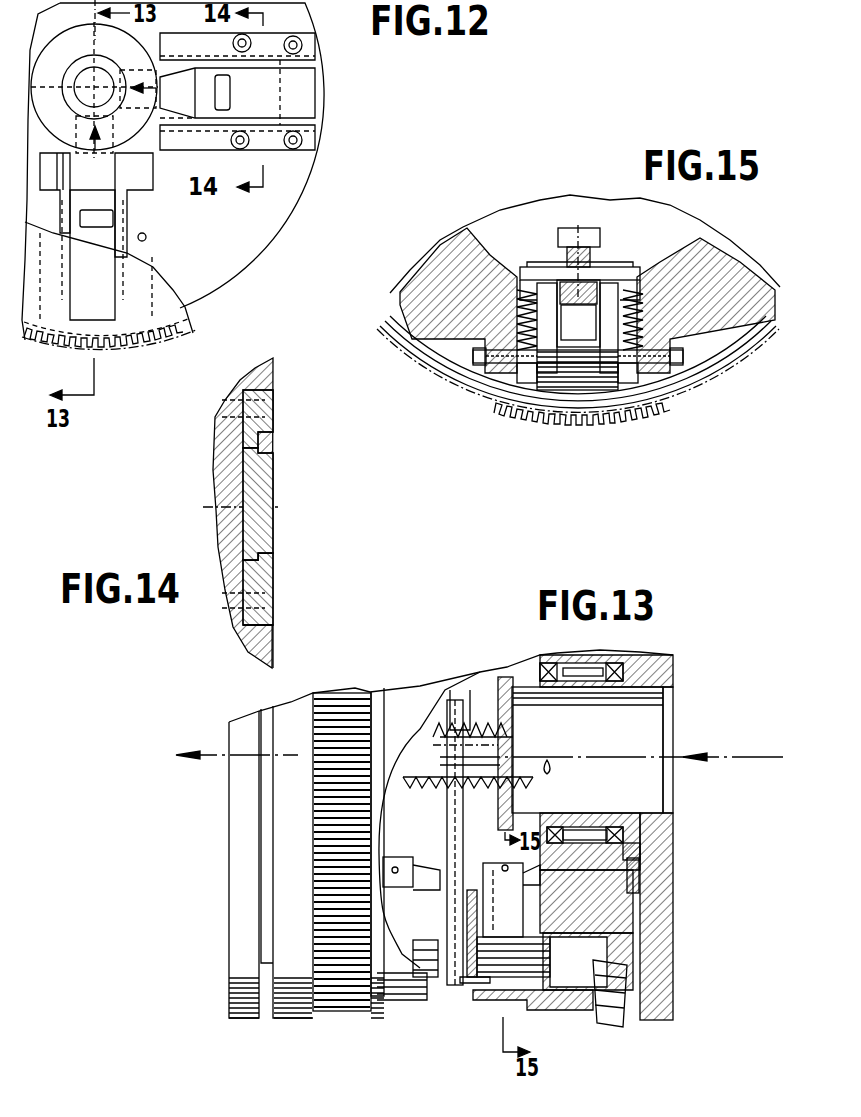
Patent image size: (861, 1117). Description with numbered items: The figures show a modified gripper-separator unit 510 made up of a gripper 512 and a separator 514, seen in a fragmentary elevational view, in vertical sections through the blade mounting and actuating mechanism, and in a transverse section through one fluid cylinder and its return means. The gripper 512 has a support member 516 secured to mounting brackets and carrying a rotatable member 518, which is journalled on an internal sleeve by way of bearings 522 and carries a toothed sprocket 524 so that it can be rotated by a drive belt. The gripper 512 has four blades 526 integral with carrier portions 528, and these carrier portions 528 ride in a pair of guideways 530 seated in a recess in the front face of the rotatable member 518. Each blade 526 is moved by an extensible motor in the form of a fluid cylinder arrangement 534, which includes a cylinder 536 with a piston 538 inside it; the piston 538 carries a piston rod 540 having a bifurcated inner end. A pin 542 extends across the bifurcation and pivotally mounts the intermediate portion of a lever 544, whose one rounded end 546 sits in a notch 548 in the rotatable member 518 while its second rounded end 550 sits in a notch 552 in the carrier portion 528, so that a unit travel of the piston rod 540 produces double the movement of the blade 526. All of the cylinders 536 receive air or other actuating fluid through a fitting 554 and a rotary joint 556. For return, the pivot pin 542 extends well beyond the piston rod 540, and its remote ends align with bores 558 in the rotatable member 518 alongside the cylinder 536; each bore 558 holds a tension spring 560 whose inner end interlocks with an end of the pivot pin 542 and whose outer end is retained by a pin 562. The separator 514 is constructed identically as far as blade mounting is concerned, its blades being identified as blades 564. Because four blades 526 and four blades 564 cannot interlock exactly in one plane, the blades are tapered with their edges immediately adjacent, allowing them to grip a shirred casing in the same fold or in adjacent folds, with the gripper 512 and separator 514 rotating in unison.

In FIG. 12, the gripper-separator unit 510 is at (256, 272).
In FIG. 12, the gripper 512 is at (273, 199).
In FIG. 13, the gripper 512 is at (683, 1008).
In FIG. 12, the separator 514 is at (173, 344).
In FIG. 13, the separator 514 is at (321, 1010).
In FIG. 13, the support member 516 is at (653, 947).
In FIG. 14, the rotatable member 518 is at (270, 375).
In FIG. 15, the rotatable member 518 is at (432, 320).
In FIG. 14, the bearings 522 is at (272, 640).
In FIG. 13, the bearings 522 is at (617, 827).
In FIG. 15, the toothed sprocket 524 is at (660, 410).
In FIG. 13, the toothed sprocket 524 is at (565, 1015).
In FIG. 13, the blades 526 is at (455, 770).
In FIG. 14, the carrier portions 528 is at (262, 497).
In FIG. 13, the carrier portions 528 is at (457, 973).
In FIG. 14, the guideways 530 is at (277, 435).
In FIG. 13, the fluid cylinder arrangement 534 is at (540, 920).
In FIG. 13, the cylinder 536 is at (475, 925).
In FIG. 15, the piston 538 is at (580, 392).
In FIG. 13, the piston 538 is at (480, 997).
In FIG. 15, the piston rod 540 is at (563, 265).
In FIG. 15, the pin 542 is at (610, 267).
In FIG. 13, the pin 542 is at (503, 870).
In FIG. 15, the lever 544 is at (567, 228).
In FIG. 13, the lever 544 is at (590, 867).
In FIG. 13, the rounded end 546 is at (623, 850).
In FIG. 15, the notch 548 is at (587, 230).
In FIG. 13, the notch 548 is at (630, 846).
In FIG. 13, the second rounded end 550 is at (450, 873).
In FIG. 13, the notch 552 is at (457, 890).
In FIG. 13, the fitting 554 is at (610, 1027).
In FIG. 13, the rotary joint 556 is at (607, 930).
In FIG. 15, the bores 558 is at (523, 385).
In FIG. 15, the tension spring 560 is at (520, 312).
In FIG. 15, the pin 562 is at (470, 363).
In FIG. 13, the blades 564 is at (452, 829).